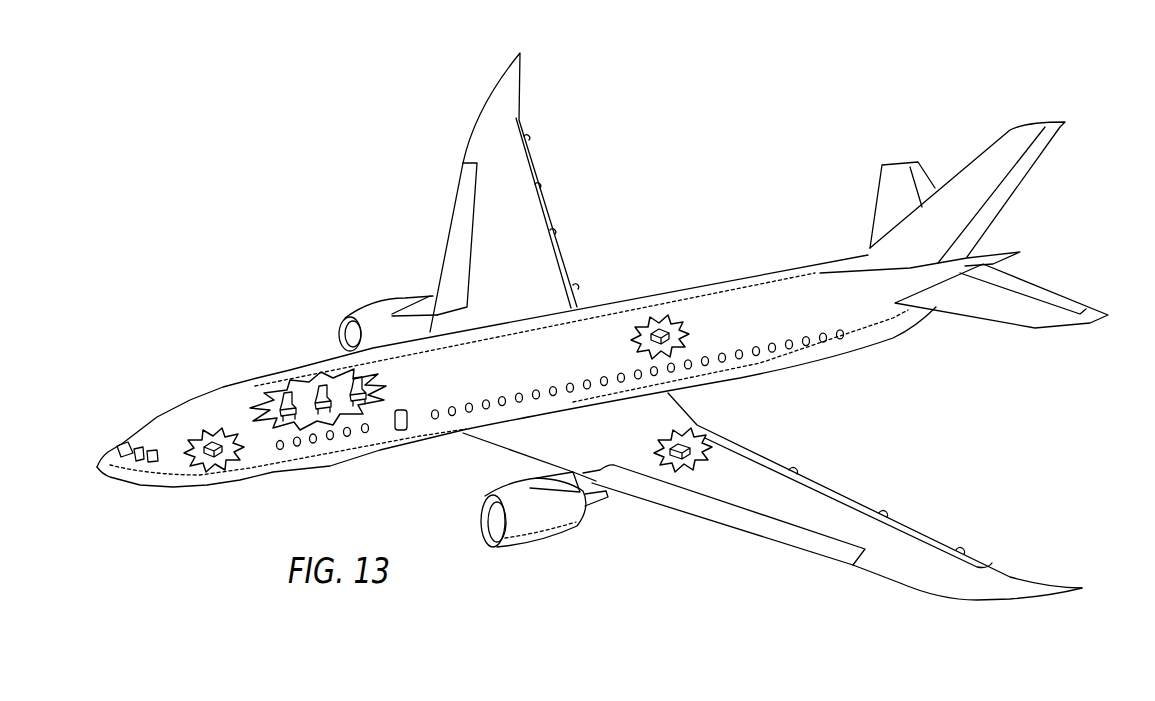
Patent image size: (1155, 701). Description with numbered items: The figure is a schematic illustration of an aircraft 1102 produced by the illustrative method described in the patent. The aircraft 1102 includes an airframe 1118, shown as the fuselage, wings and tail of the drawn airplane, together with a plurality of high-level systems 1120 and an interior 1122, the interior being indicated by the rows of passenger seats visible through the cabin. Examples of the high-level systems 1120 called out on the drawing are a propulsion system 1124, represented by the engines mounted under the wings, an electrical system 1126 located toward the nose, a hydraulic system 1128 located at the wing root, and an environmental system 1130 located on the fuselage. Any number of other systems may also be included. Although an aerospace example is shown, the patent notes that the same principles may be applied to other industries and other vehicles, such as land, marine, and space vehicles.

The aircraft 1102 is at (336, 206).
The airframe 1118 is at (325, 402).
The high-level systems 1120 is at (1001, 459).
The interior 1122 is at (307, 417).
The propulsion system 1124 is at (374, 304).
The electrical system 1126 is at (212, 437).
The hydraulic system 1128 is at (687, 437).
The environmental system 1130 is at (653, 331).